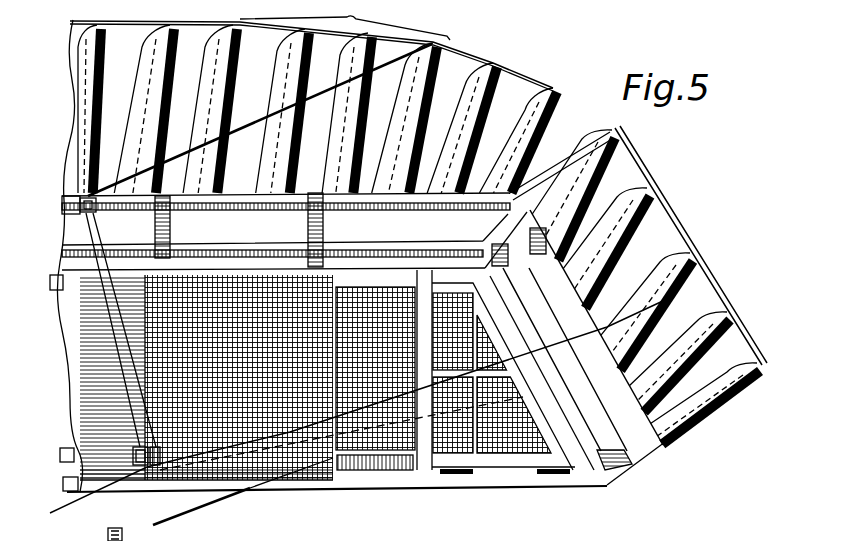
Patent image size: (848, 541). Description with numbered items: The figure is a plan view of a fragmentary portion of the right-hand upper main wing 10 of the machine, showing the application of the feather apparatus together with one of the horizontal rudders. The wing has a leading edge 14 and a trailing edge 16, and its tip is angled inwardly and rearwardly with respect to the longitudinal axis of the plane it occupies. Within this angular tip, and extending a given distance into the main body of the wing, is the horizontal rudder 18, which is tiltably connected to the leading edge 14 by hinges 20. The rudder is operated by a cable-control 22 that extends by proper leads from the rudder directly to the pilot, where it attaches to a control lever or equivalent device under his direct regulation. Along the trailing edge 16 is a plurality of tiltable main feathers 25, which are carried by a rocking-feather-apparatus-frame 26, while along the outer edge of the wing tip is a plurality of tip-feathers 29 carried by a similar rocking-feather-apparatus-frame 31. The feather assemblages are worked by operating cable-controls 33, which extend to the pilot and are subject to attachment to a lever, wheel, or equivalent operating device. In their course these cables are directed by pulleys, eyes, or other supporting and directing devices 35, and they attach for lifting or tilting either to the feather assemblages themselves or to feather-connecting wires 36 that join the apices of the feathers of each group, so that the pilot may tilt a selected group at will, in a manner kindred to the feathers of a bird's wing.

The upper main wing 10 is at (70, 312).
The leading edge 14 is at (66, 488).
The trailing edge 16 is at (56, 284).
The horizontal rudder 18 is at (522, 432).
The hinge 20 is at (462, 478).
The operating cable-control 22 is at (203, 508).
The main feathers 25 is at (148, 64).
The rocking-feather-apparatus-frame 26 is at (155, 229).
The tip-feathers 29 is at (701, 243).
The rocking-feather-apparatus-frame 31 is at (574, 301).
The operating cable-controls 33 is at (57, 178).
The supporting and directing devices 35 is at (80, 216).
The feather-connecting wires 36 is at (183, 60).